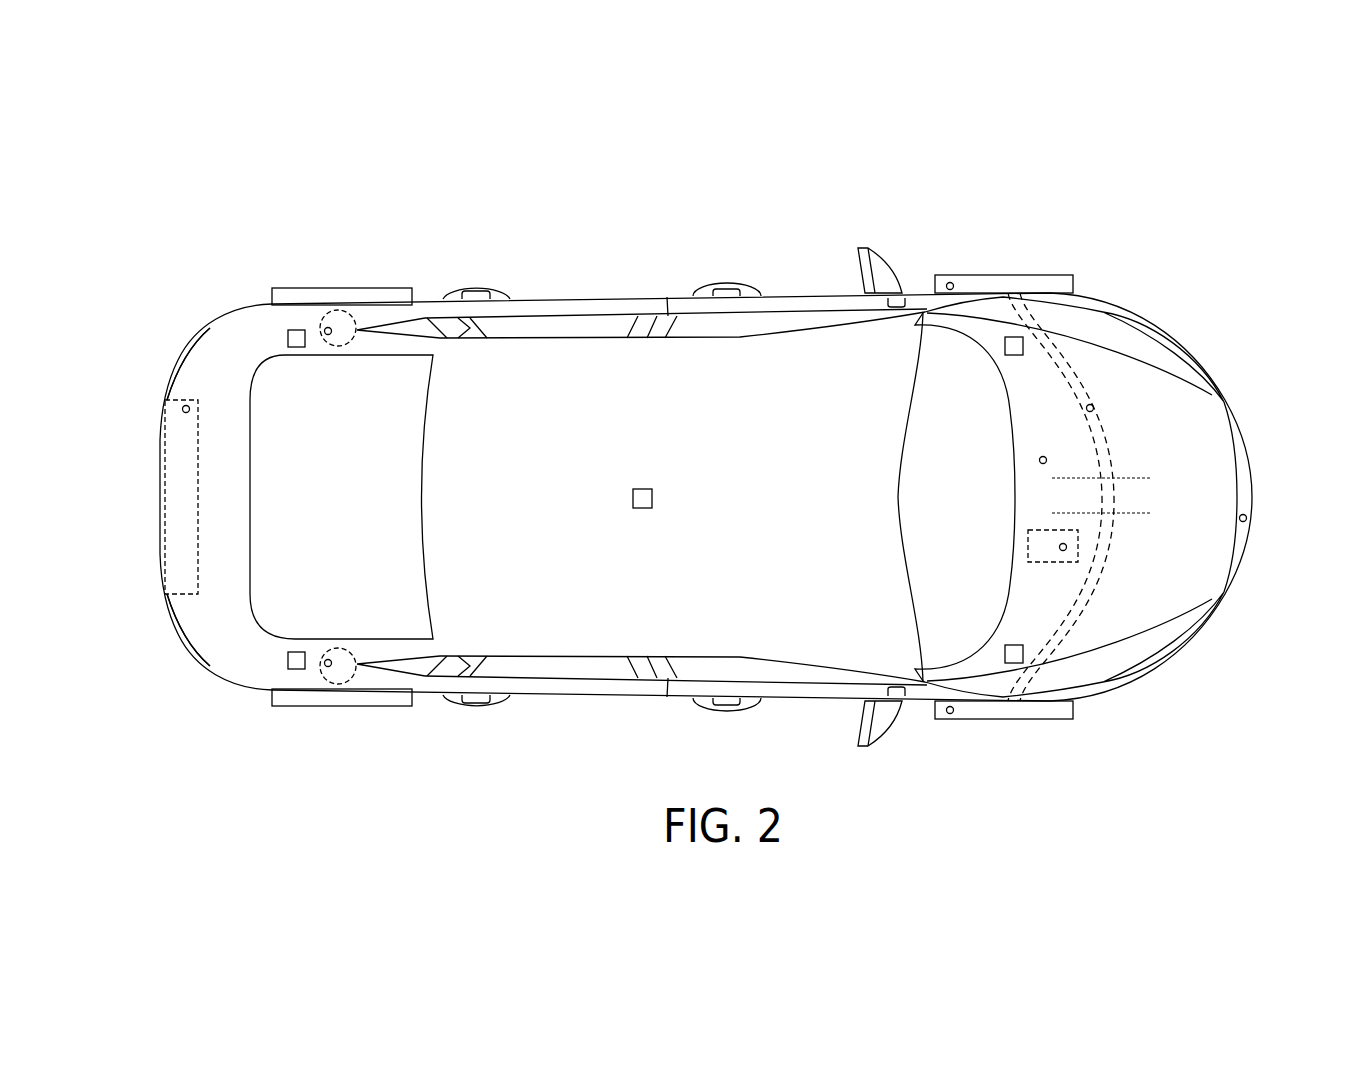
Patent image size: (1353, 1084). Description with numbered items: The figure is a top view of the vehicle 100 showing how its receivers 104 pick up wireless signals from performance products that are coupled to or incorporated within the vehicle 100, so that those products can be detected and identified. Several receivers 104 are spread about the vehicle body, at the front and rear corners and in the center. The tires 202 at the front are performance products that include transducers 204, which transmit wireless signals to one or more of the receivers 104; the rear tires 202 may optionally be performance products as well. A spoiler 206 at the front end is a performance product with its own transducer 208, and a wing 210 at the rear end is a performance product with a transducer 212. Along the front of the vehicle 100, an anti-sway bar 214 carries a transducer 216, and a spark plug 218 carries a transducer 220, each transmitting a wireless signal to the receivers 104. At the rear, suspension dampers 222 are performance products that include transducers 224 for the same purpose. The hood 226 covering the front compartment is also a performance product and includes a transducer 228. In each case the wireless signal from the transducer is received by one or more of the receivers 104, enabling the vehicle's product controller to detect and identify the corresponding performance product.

The vehicle 100 is at (1134, 198).
The receivers 104 is at (288, 339).
The tires 202 is at (393, 288).
The transducers 204 is at (950, 282).
The spoiler 206 is at (1252, 475).
The transducer 208 is at (1247, 518).
The wing 210 is at (170, 504).
The transducer 212 is at (184, 412).
The anti-sway bar 214 is at (1083, 378).
The transducer 216 is at (1094, 409).
The spark plug 218 is at (1048, 563).
The transducer 220 is at (1067, 547).
The dampers 222 is at (340, 310).
The transducers 224 is at (328, 335).
The hood 226 is at (1190, 592).
The transducer 228 is at (1043, 456).